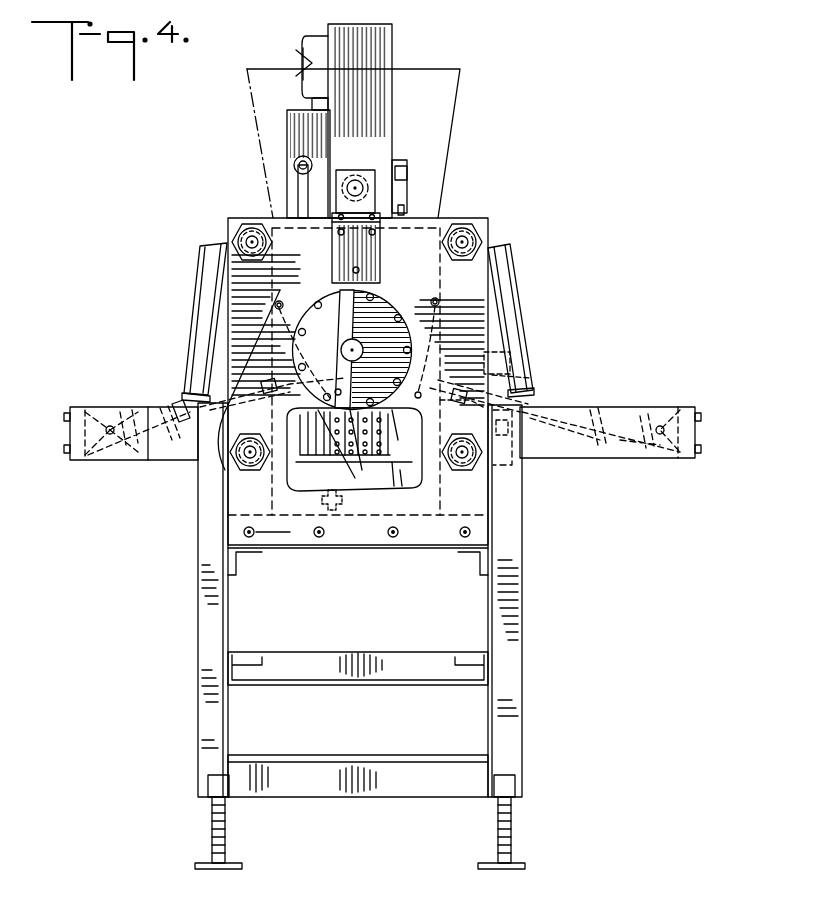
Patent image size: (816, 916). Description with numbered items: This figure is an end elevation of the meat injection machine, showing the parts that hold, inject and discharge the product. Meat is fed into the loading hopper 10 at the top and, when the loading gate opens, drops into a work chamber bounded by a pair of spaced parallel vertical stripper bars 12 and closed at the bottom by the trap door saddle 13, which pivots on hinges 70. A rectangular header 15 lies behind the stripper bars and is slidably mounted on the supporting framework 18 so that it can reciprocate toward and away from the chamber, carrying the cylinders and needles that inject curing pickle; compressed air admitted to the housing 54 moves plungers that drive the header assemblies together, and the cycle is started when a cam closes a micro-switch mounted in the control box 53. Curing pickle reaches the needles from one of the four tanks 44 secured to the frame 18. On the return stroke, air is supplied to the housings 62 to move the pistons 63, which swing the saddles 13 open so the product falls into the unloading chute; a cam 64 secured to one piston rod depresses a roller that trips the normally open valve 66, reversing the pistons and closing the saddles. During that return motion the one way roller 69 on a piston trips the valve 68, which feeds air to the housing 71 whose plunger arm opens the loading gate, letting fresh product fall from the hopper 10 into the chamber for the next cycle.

The loading hopper 10 is at (455, 95).
The stripper bars 12 is at (356, 478).
The saddle 13 is at (272, 362).
The header 15 is at (400, 478).
The supporting framework 18 is at (518, 592).
The tank 44 is at (200, 270).
The control box 53 is at (303, 40).
The housing 54 is at (392, 310).
The housing 62 is at (168, 402).
The piston 63 is at (580, 385).
The cam 64 is at (462, 418).
The valve 66 is at (518, 438).
The valve 68 is at (527, 357).
The one way roller 69 is at (532, 379).
The hinge 70 is at (284, 302).
The housing 71 is at (370, 172).